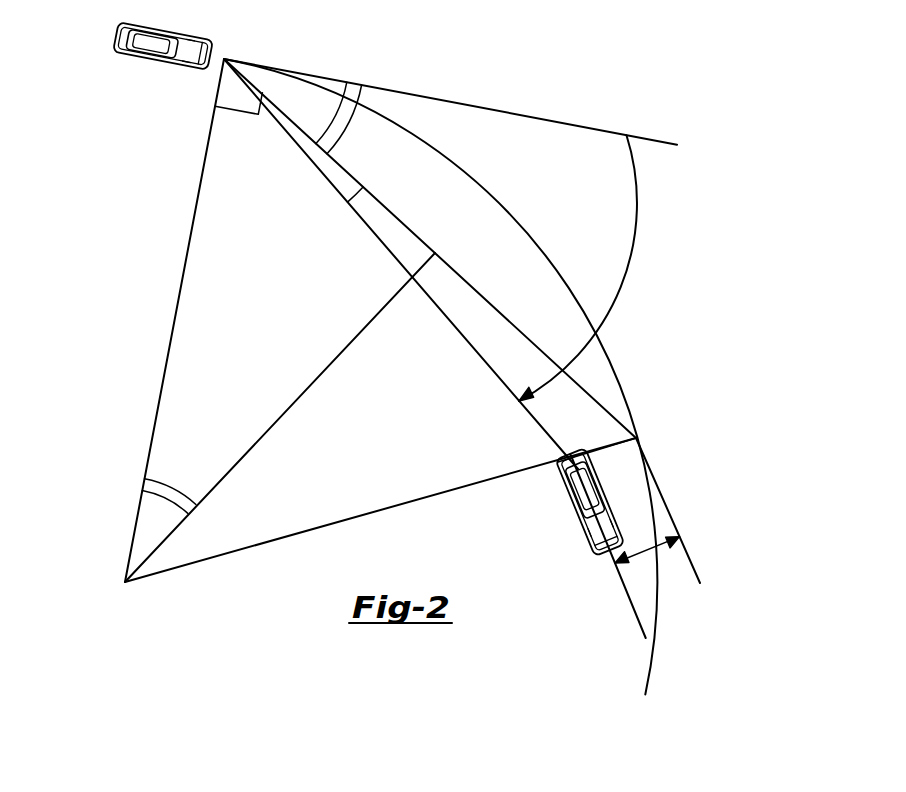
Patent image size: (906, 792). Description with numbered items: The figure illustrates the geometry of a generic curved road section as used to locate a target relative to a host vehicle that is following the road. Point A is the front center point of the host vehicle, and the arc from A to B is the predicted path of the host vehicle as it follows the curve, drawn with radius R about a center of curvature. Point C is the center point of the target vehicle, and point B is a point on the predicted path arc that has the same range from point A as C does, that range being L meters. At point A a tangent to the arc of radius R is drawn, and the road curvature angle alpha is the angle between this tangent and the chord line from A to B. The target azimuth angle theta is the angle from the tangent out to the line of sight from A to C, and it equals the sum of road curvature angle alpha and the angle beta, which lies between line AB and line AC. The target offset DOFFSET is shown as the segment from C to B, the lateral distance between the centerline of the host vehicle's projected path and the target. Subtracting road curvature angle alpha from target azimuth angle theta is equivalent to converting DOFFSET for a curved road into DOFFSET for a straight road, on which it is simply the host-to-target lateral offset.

The front center point of host vehicle A is at (181, 46).
The point on the predicted path B is at (412, 321).
The center point of the target vehicle C is at (590, 543).
The radius R is at (174, 320).
The range L is at (280, 417).
The road curvature angle alpha is at (258, 310).
The angle beta is at (347, 194).
The target azimuth angle theta is at (628, 268).
The target offset DOFFSET is at (609, 568).